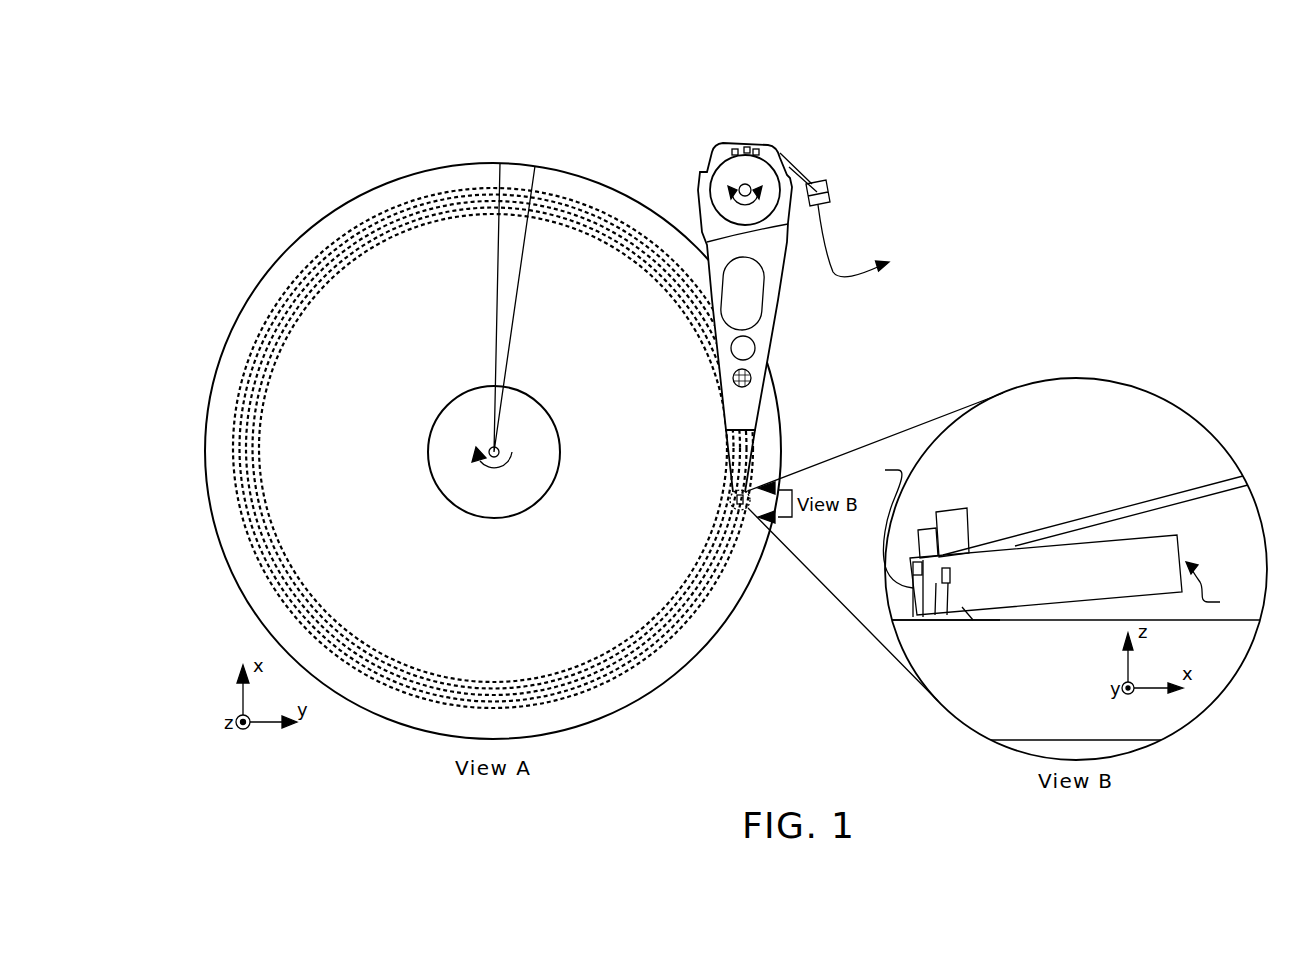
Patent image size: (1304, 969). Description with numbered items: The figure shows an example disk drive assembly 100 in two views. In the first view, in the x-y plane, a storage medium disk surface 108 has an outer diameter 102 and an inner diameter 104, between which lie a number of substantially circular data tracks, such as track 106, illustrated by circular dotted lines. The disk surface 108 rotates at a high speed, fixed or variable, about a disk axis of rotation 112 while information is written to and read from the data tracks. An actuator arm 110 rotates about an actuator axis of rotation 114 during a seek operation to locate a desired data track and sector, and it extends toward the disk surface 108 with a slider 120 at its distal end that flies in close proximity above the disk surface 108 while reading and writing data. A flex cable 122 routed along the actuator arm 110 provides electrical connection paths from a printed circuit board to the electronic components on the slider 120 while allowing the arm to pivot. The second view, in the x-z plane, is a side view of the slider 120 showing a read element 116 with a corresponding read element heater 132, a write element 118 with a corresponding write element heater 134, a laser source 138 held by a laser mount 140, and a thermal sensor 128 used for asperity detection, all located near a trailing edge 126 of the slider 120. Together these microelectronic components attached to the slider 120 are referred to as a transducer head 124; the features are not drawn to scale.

The disk drive assembly 100 is at (283, 83).
The outer diameter 102 is at (557, 182).
The inner diameter 104 is at (486, 386).
The data track 106 is at (390, 210).
The disk surface 108 is at (508, 601).
The actuator arm 110 is at (707, 272).
The disk axis of rotation 112 is at (503, 467).
The actuator axis of rotation 114 is at (741, 188).
The read element 116 is at (973, 620).
The write element 118 is at (913, 588).
The slider 120 is at (735, 499).
The flex cable 122 is at (833, 272).
The transducer head 124 is at (1222, 588).
The trailing edge 126 is at (897, 622).
The thermal sensor 128 is at (943, 617).
The read element heater 132 is at (950, 570).
The write element heater 134 is at (878, 525).
The laser source 138 is at (932, 529).
The laser mount 140 is at (955, 509).